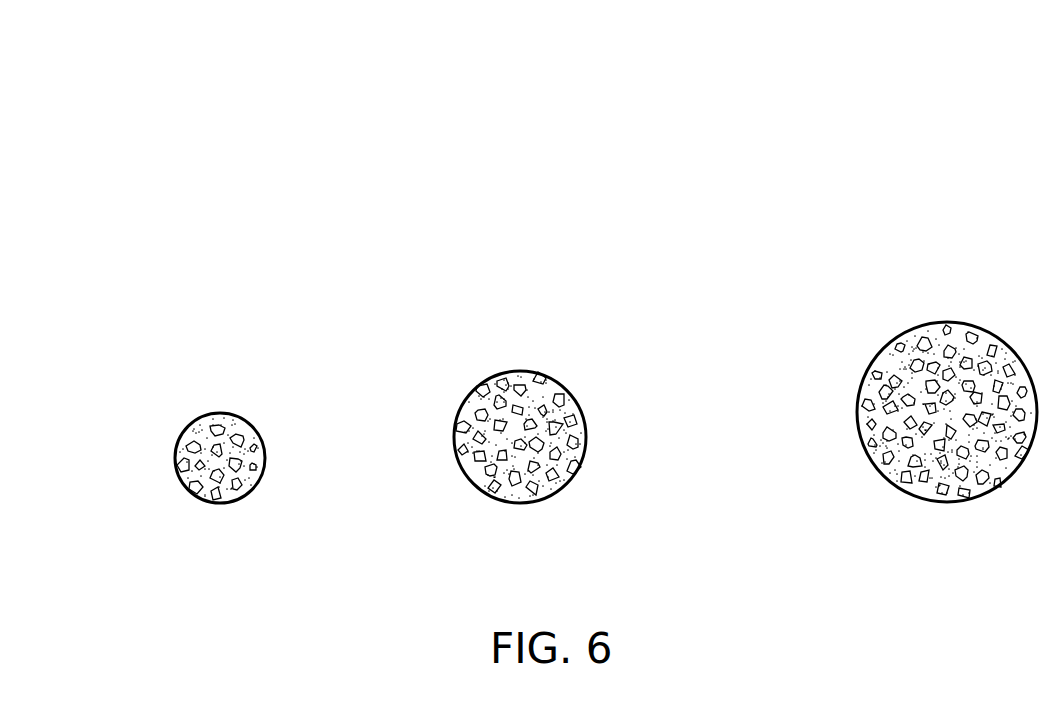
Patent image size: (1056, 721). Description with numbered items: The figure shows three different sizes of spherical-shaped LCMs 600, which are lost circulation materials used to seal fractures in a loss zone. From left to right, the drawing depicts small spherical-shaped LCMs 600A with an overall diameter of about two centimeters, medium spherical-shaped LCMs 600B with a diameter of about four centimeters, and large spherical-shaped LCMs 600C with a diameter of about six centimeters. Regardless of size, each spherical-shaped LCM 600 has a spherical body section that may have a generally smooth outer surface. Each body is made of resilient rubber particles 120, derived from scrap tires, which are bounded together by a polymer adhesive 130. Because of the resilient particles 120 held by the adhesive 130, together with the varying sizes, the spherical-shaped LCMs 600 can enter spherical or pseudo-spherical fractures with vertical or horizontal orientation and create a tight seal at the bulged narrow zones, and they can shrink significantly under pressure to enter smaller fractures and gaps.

The spherical-shaped LCMs 600 is at (560, 258).
The small spherical-shaped LCMs 600A is at (174, 378).
The medium spherical-shaped LCMs 600B is at (481, 357).
The large spherical-shaped LCMs 600C is at (907, 335).
The rubber particles 120 is at (190, 480).
The polymer adhesive 130 is at (228, 500).